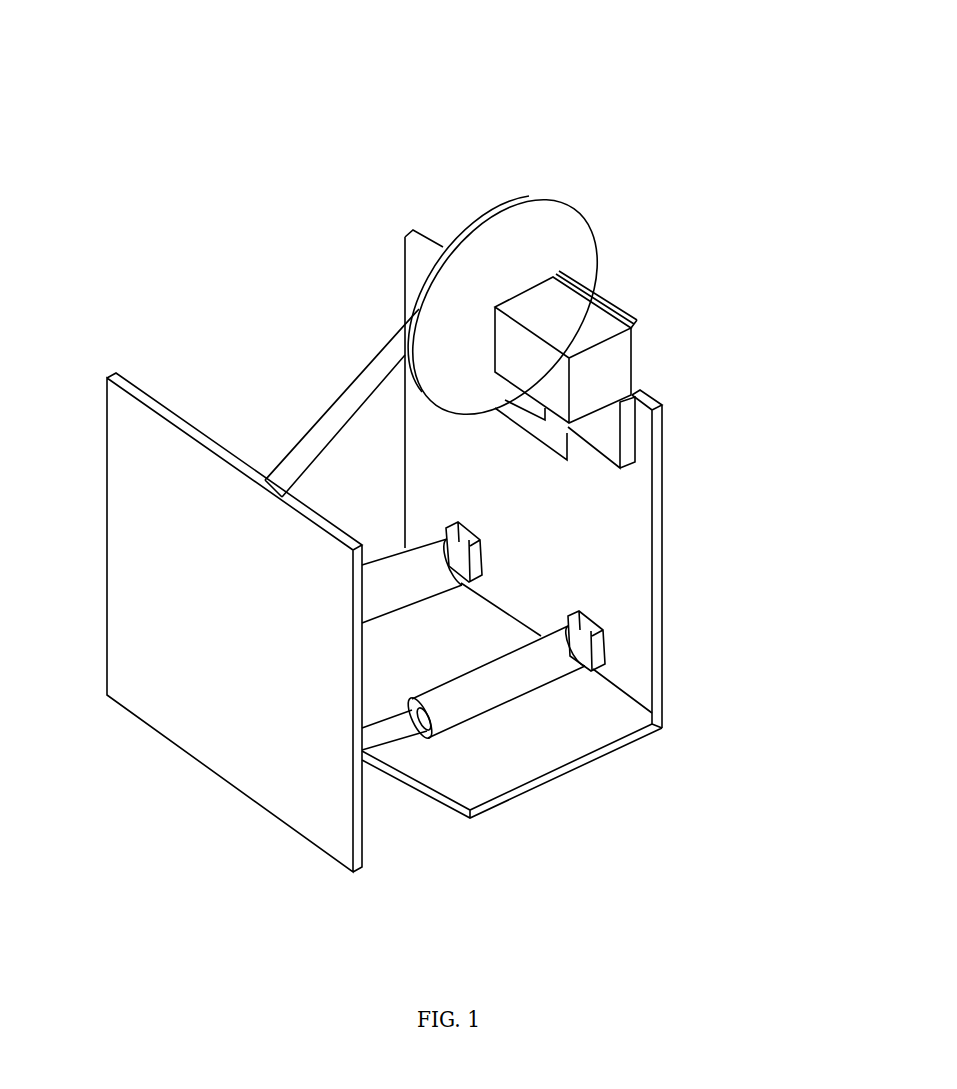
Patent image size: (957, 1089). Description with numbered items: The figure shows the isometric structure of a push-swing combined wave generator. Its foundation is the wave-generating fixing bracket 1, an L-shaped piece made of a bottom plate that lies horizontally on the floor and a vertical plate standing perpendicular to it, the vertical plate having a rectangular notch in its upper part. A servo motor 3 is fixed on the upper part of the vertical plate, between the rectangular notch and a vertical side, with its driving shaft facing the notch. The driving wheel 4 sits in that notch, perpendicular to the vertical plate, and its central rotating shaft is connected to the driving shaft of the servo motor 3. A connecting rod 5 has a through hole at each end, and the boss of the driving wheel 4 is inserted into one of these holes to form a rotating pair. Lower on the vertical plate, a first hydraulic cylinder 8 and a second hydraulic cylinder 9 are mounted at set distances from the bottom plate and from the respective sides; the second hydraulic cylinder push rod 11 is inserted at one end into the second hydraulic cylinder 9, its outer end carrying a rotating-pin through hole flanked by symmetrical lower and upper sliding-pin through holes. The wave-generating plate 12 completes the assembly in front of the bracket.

The wave-generating fixing bracket 1 is at (623, 572).
The servo motor 3 is at (561, 324).
The driving wheel 4 is at (521, 232).
The connecting rod 5 is at (355, 385).
The first hydraulic cylinder 8 is at (398, 578).
The second hydraulic cylinder 9 is at (502, 680).
The second hydraulic cylinder push rod 11 is at (392, 735).
The wave-generating plate 12 is at (248, 695).